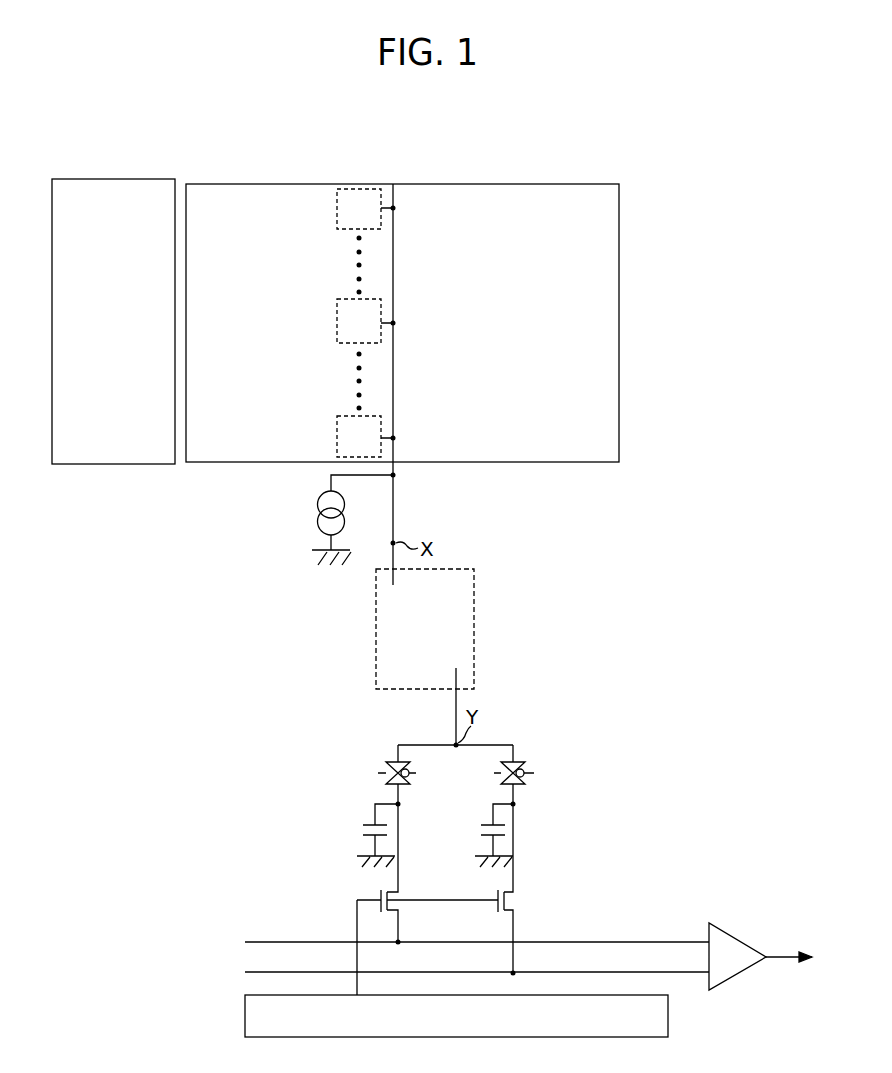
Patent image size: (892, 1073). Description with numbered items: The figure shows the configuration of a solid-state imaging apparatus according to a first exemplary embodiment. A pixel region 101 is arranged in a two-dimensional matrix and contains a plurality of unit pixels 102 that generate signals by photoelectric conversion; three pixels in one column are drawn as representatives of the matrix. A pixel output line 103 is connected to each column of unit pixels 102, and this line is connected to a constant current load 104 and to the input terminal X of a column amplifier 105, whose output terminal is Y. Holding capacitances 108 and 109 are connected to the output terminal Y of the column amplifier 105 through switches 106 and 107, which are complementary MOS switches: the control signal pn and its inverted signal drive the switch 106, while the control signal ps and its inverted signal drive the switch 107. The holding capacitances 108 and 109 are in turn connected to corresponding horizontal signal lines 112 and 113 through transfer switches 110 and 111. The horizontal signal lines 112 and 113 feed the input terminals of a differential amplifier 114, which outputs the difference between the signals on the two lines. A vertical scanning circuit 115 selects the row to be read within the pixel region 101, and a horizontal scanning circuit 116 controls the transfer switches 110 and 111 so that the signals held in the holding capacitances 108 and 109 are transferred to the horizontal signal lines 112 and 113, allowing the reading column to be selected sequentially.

The pixel region 101 is at (258, 184).
The unit pixel 102 is at (337, 324).
The pixel output line 103 is at (395, 497).
The constant current load 104 is at (317, 512).
The column amplifier 105 is at (475, 612).
The switch 106 is at (392, 762).
The switch 107 is at (540, 754).
The holding capacitance 108 is at (363, 831).
The holding capacitance 109 is at (481, 831).
The transfer switch 110 is at (397, 899).
The transfer switch 111 is at (517, 902).
The horizontal signal line 112 is at (606, 941).
The horizontal signal line 113 is at (606, 971).
The differential amplifier 114 is at (754, 921).
The vertical scanning circuit 115 is at (108, 179).
The horizontal scanning circuit 116 is at (670, 1017).